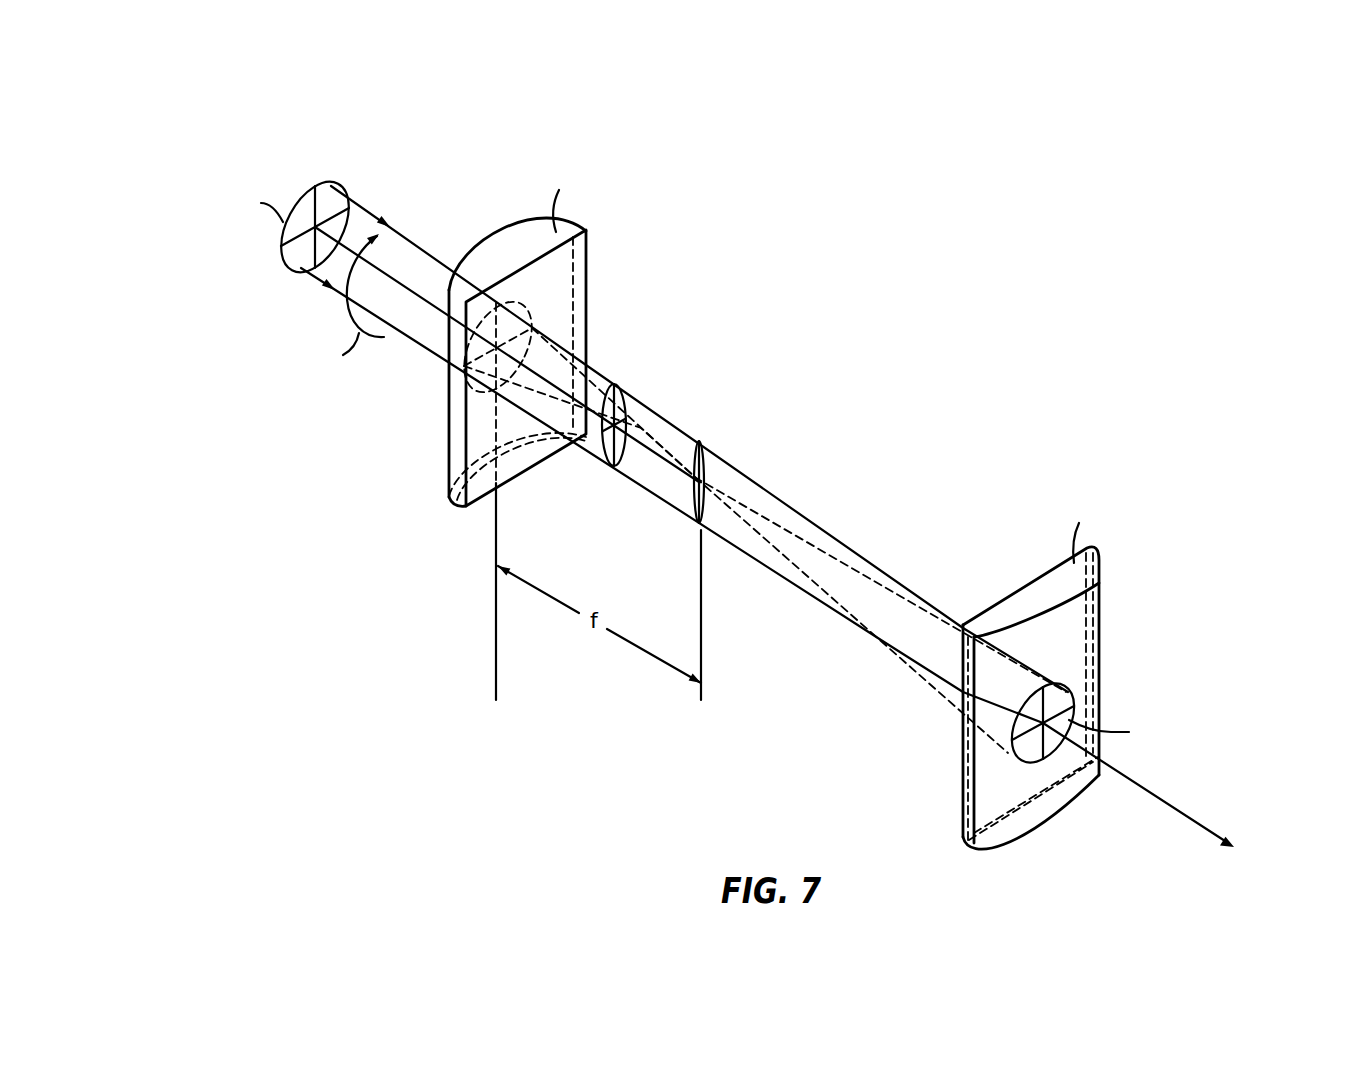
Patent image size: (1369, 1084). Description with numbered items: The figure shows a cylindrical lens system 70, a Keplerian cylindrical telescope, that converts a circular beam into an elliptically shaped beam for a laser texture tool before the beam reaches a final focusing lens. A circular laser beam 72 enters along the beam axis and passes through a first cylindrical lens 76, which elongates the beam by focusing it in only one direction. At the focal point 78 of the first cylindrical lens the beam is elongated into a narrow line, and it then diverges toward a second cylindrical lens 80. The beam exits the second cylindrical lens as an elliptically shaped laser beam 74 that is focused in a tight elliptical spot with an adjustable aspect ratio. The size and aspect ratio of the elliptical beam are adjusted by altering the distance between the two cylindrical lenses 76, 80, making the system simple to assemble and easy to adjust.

The cylindrical lens system 70 is at (125, 129).
The circular laser beam 72 is at (420, 232).
The elliptically shaped laser beam 74 is at (1158, 798).
The first cylindrical lens 76 is at (579, 276).
The focal point 78 is at (693, 433).
The second cylindrical lens 80 is at (1092, 612).